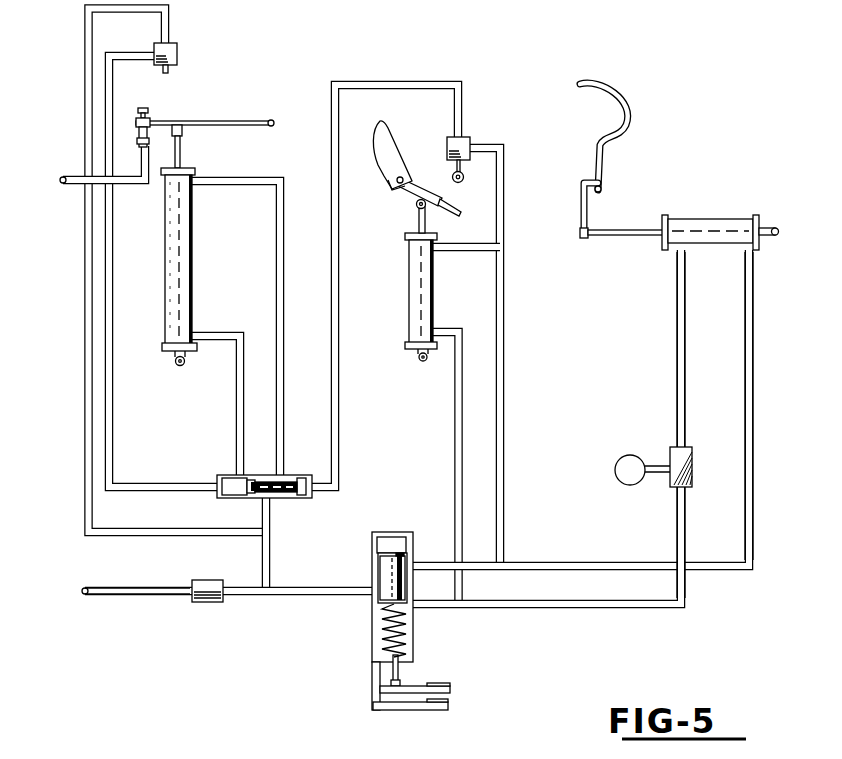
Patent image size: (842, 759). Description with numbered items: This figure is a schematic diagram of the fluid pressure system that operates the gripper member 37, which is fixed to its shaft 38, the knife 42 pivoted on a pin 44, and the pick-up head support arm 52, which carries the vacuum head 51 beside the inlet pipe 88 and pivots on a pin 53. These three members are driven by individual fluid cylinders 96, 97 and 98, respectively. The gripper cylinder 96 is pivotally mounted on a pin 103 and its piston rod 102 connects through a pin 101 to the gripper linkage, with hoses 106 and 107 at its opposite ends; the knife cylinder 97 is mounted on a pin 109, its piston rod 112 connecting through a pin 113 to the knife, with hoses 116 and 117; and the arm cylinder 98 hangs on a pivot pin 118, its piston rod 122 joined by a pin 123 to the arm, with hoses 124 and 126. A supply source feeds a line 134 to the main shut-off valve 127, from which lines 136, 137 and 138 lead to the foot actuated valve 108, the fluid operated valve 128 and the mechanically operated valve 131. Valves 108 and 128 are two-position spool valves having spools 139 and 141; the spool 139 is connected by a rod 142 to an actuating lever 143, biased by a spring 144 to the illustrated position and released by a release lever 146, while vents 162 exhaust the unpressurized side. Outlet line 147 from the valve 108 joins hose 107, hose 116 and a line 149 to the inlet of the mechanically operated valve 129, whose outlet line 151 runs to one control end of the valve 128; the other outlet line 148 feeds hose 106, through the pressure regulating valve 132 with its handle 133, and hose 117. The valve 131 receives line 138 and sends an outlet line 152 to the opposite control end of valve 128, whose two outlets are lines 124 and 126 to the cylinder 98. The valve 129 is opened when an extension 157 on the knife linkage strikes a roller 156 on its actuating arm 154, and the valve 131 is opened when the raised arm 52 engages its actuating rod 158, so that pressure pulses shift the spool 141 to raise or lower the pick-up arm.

The gripper member 37 is at (612, 96).
The shaft 38 is at (604, 191).
The knife 42 is at (390, 128).
The pin 44 is at (392, 180).
The vacuum head 51 is at (147, 108).
The pick-up head support arm 52 is at (212, 121).
The pin 53 is at (272, 119).
The inlet pipe 88 is at (148, 181).
The fluid cylinder 96 is at (712, 218).
The fluid cylinder 97 is at (410, 306).
The fluid cylinder 98 is at (193, 262).
The pin 101 is at (586, 240).
The piston rod 102 is at (630, 228).
The pin 103 is at (775, 236).
The hose 106 is at (676, 291).
The hose 107 is at (745, 290).
The foot actuated valve 108 is at (380, 532).
The pin 109 is at (418, 360).
The piston rod 112 is at (418, 224).
The pin 113 is at (416, 204).
The hose 116 is at (478, 252).
The hose 117 is at (455, 430).
The pivot pin 118 is at (185, 364).
The piston rod 122 is at (181, 156).
The pin 123 is at (183, 131).
The hose 124 is at (208, 186).
The hose 126 is at (208, 332).
The main shut-off valve 127 is at (212, 601).
The fluid operated valve 128 is at (300, 476).
The mechanically operated valve 129 is at (466, 137).
The mechanically operated valve 131 is at (178, 47).
The pressure regulating valve 132 is at (670, 450).
The handle 133 is at (614, 470).
The line 134 is at (122, 596).
The line 136 is at (312, 596).
The line 137 is at (270, 517).
The line 138 is at (85, 398).
The spool 139 is at (388, 575).
The spool 141 is at (262, 476).
The rod 142 is at (388, 678).
The actuating lever 143 is at (445, 689).
The spring 144 is at (385, 632).
The release lever 146 is at (410, 712).
The outlet line 147 is at (445, 562).
The outlet line 148 is at (440, 608).
The line 149 is at (504, 228).
The outlet line 151 is at (332, 246).
The outlet line 152 is at (114, 395).
The actuating arm 154 is at (462, 168).
The roller 156 is at (464, 181).
The extension 157 is at (447, 213).
The actuating rod 158 is at (170, 71).
The vents 162 is at (398, 532).